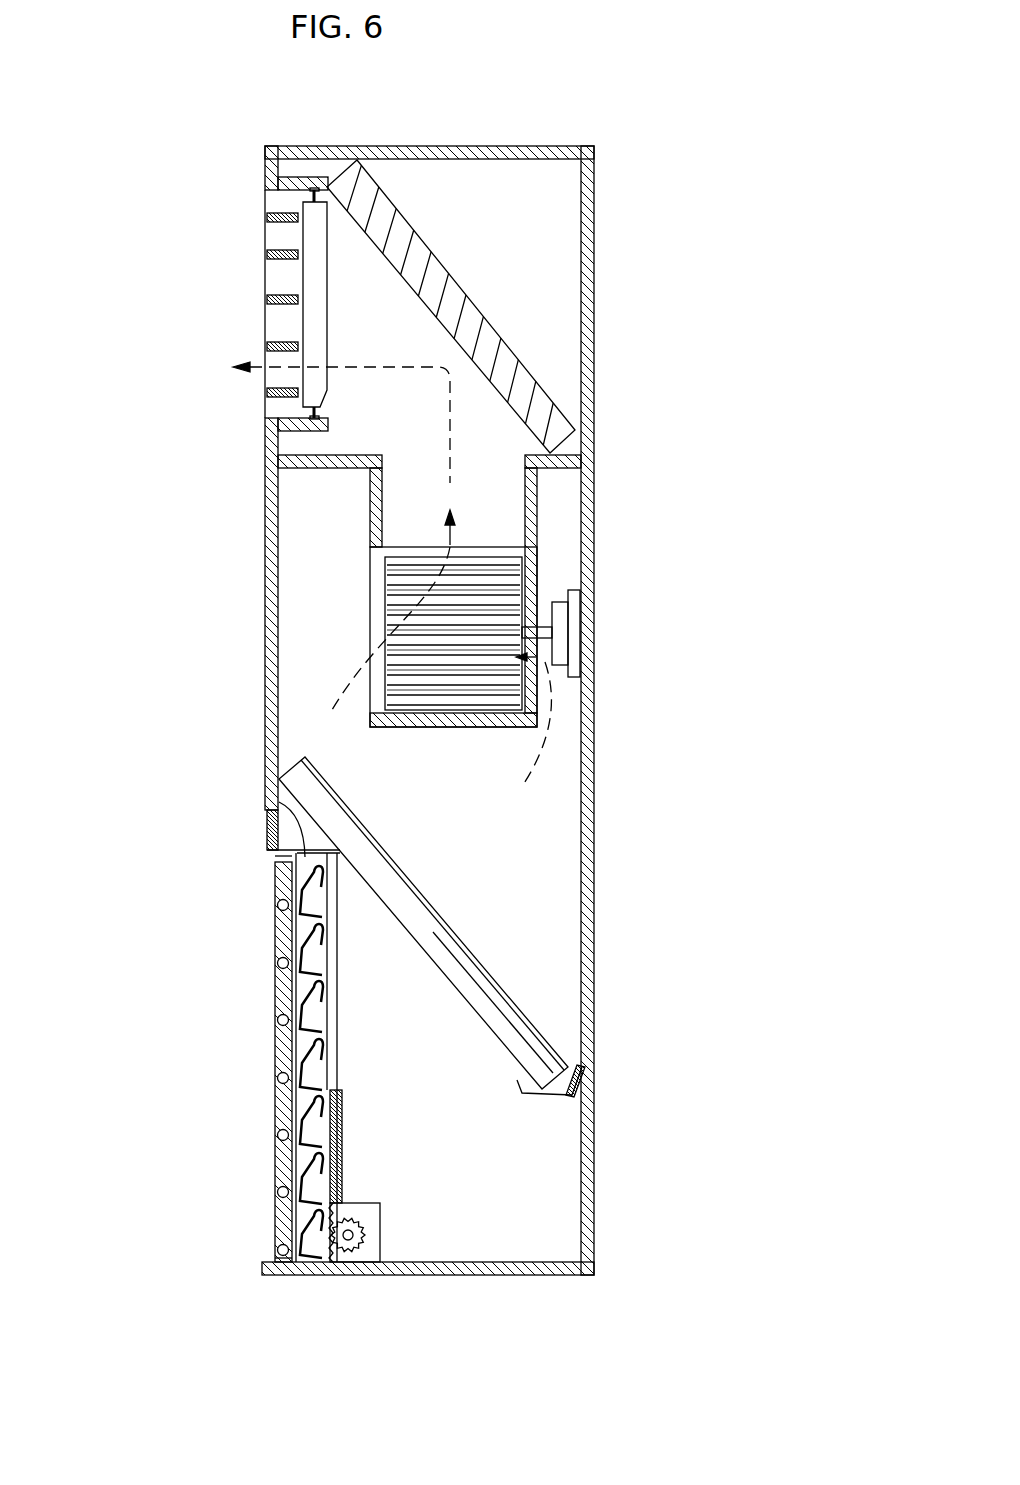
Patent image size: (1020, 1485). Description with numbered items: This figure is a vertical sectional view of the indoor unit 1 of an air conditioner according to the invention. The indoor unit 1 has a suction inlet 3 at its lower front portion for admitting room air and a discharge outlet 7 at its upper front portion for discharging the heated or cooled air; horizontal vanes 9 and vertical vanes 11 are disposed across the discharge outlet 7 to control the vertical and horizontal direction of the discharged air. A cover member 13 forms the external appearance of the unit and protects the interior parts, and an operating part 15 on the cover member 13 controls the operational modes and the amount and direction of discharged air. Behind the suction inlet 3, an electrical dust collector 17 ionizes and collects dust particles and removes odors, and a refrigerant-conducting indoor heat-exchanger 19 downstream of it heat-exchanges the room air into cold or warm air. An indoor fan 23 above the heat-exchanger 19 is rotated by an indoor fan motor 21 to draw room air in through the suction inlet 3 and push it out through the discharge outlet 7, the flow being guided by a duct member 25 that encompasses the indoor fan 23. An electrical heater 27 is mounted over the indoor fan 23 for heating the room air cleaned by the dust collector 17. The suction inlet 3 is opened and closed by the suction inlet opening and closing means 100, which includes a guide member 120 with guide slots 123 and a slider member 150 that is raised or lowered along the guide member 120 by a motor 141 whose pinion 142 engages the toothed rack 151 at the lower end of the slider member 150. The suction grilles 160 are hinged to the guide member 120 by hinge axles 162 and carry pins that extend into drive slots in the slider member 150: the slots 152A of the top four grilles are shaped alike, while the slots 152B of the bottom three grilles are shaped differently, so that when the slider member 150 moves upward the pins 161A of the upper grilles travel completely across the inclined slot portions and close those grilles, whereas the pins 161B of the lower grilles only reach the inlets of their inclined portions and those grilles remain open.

The indoor unit 1 is at (593, 823).
The suction inlet 3 is at (258, 886).
The discharge outlet 7 is at (272, 322).
The horizontal vanes 9 is at (277, 253).
The vertical vanes 11 is at (312, 208).
The cover member 13 is at (270, 598).
The operating part 15 is at (267, 817).
The electrical dust collector 17 is at (343, 1183).
The indoor heat-exchanger 19 is at (410, 892).
The indoor fan motor 21 is at (572, 633).
The indoor fan 23 is at (508, 583).
The duct member 25 is at (533, 507).
The electrical heater 27 is at (432, 267).
The suction inlet opening and closing means 100 is at (260, 1078).
The guide member 120 is at (335, 1003).
The guide slots 123 is at (322, 983).
The motor 141 is at (380, 1243).
The pinion 142 is at (363, 1245).
The slider member 150 is at (267, 807).
The toothed rack 151 is at (350, 1277).
The drive slots of upper grilles 152A is at (277, 865).
The drive slots of lower grilles 152B is at (280, 1077).
The suction grilles 160 is at (280, 1158).
The pins of upper grilles 161A is at (283, 907).
The pins of lower grilles 161B is at (333, 1087).
The hinge axles 162 is at (277, 1250).